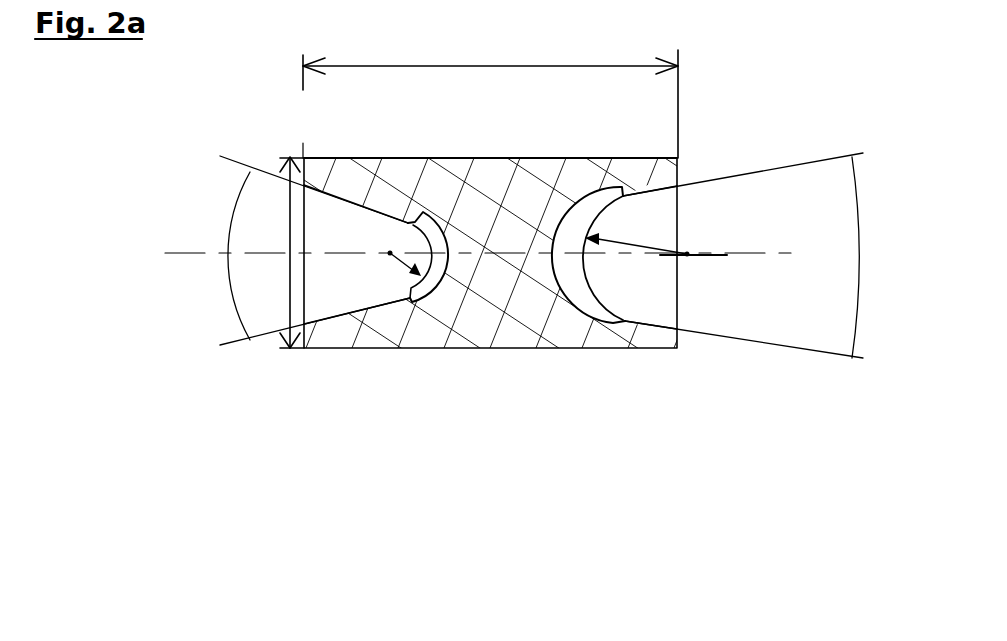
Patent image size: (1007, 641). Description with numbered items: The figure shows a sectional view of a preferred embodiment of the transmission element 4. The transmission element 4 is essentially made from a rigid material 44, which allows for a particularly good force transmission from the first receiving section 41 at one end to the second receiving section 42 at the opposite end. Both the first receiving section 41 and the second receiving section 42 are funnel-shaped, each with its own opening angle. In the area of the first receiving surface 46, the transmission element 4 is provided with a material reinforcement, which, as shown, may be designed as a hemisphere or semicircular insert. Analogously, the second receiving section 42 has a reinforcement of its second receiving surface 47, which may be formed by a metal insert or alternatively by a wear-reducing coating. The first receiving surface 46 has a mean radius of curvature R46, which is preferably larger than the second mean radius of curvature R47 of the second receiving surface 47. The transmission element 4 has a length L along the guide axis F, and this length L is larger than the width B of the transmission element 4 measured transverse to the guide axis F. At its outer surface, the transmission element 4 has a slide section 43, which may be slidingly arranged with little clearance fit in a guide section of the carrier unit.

The transmission element 4 is at (447, 418).
The first receiving section 41 is at (615, 283).
The second receiving section 42 is at (375, 274).
The slide section 43 is at (502, 158).
The rigid material 44 is at (500, 293).
The first receiving surface 46 is at (598, 229).
The second receiving surface 47 is at (425, 235).
The mean radius of curvature R46 is at (660, 255).
The second mean radius of curvature R47 is at (390, 256).
The length L is at (420, 66).
The width B is at (288, 223).
The guide axis F is at (727, 255).